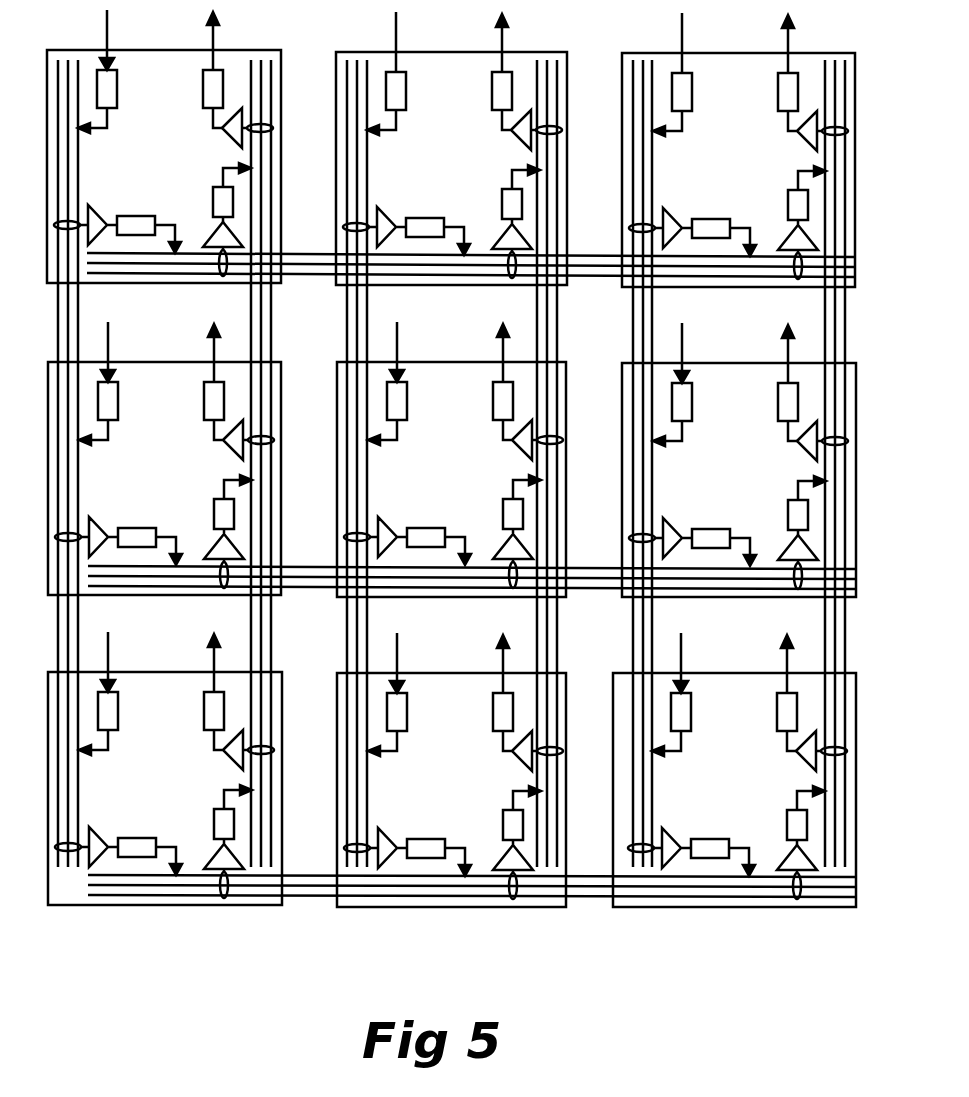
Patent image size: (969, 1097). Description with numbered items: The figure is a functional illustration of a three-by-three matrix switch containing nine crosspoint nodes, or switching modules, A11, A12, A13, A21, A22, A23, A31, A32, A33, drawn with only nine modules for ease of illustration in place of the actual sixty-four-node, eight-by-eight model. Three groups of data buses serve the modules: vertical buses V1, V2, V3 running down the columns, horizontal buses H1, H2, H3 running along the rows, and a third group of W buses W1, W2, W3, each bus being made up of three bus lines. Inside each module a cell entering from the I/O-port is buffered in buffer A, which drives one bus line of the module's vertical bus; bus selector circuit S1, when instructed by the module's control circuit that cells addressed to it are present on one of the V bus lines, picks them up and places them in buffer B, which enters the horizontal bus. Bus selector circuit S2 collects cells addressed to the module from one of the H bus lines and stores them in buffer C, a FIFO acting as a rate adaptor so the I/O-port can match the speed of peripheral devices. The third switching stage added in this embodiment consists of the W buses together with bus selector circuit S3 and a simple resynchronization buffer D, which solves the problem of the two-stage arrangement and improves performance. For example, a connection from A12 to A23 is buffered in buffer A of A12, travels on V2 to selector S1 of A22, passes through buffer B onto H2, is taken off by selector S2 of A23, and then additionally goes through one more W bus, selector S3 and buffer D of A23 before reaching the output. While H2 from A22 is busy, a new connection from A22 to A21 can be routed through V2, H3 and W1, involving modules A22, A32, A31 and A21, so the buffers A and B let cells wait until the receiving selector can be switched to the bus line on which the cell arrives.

The buffer A is at (397, 383).
The buffer B is at (436, 531).
The buffer C is at (509, 504).
The buffer D is at (491, 381).
The bus selector circuit S1 is at (373, 527).
The bus selector circuit S2 is at (501, 555).
The bus selector circuit S3 is at (517, 443).
The vertical bus V1 is at (63, 444).
The vertical bus V2 is at (362, 445).
The vertical bus V3 is at (649, 445).
The W bus W1 is at (270, 444).
The W bus W2 is at (555, 445).
The W bus W3 is at (845, 445).
The horizontal bus H1 is at (493, 269).
The horizontal bus H2 is at (494, 580).
The horizontal bus H3 is at (494, 890).
The switching module A11 is at (164, 152).
The switching module A12 is at (451, 154).
The switching module A13 is at (738, 155).
The switching module A21 is at (164, 464).
The switching module A22 is at (451, 465).
The switching module A23 is at (739, 466).
The switching module A31 is at (165, 774).
The switching module A32 is at (451, 775).
The switching module A33 is at (734, 776).